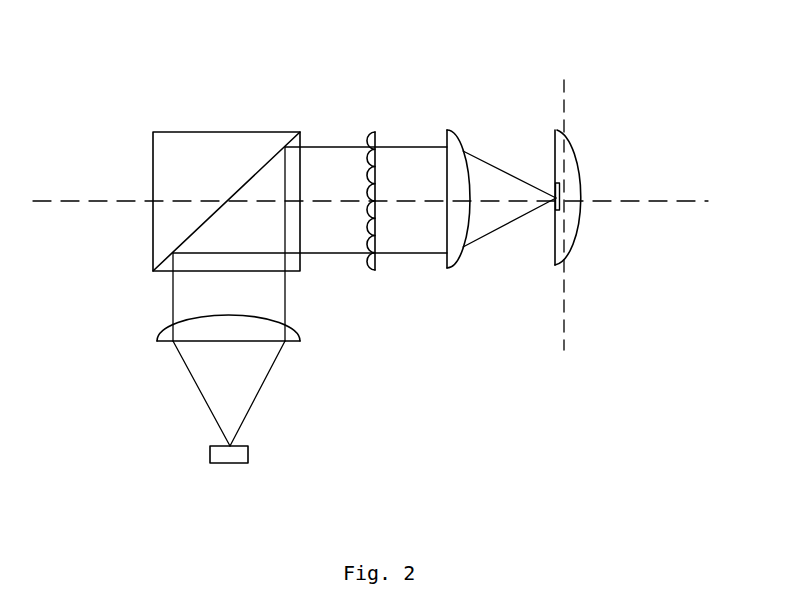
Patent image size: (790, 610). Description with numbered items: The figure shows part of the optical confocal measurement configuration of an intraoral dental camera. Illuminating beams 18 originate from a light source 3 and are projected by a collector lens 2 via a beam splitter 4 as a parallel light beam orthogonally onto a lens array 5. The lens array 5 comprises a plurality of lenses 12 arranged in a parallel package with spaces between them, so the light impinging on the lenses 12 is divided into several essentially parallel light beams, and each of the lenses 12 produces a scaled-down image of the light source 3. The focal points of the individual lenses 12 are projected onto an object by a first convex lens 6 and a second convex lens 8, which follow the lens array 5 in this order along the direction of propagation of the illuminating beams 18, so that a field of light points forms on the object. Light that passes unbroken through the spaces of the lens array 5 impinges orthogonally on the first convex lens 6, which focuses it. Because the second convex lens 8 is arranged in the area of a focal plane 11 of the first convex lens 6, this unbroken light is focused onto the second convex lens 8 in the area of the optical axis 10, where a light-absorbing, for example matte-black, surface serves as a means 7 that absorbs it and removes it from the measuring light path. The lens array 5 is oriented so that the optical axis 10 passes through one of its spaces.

The collector lens 2 is at (300, 338).
The light source 3 is at (238, 456).
The beam splitter 4 is at (185, 140).
The lens array 5 is at (375, 133).
The first convex lens 6 is at (452, 138).
The means (light-absorbing surface) 7 is at (556, 186).
The second convex lens 8 is at (573, 167).
The optical axis 10 is at (680, 202).
The focal plane 11 is at (564, 338).
The lenses 12 is at (372, 135).
The illuminating beams 18 is at (197, 392).